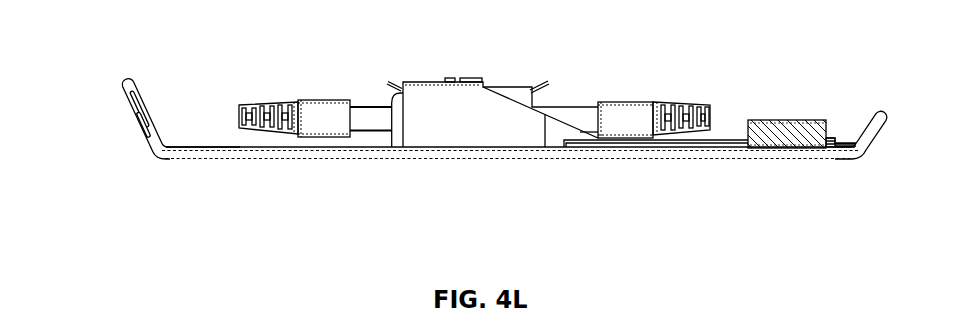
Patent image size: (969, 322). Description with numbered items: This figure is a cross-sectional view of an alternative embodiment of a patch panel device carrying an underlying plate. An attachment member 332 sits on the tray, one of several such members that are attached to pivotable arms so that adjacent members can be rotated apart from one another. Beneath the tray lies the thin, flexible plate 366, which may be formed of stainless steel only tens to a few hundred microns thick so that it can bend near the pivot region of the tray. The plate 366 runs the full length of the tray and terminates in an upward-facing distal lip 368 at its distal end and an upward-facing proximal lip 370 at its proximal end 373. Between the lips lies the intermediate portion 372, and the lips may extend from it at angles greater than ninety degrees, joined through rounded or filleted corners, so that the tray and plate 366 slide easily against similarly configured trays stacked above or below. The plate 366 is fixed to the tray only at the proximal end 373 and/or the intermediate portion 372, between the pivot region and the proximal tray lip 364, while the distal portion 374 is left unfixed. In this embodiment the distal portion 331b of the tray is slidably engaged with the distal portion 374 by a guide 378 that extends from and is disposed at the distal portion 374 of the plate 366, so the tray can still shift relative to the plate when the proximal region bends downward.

The proximal tray lip 364 is at (130, 82).
The attachment member 332 is at (428, 88).
The guide 378 is at (770, 119).
The distal portion of the tray 331b is at (845, 128).
The distal lip 368 is at (882, 112).
The proximal lip 370 is at (151, 153).
The proximal end 373 is at (226, 150).
The intermediate portion 372 is at (423, 153).
The plate 366 is at (553, 153).
The distal portion 374 is at (837, 156).